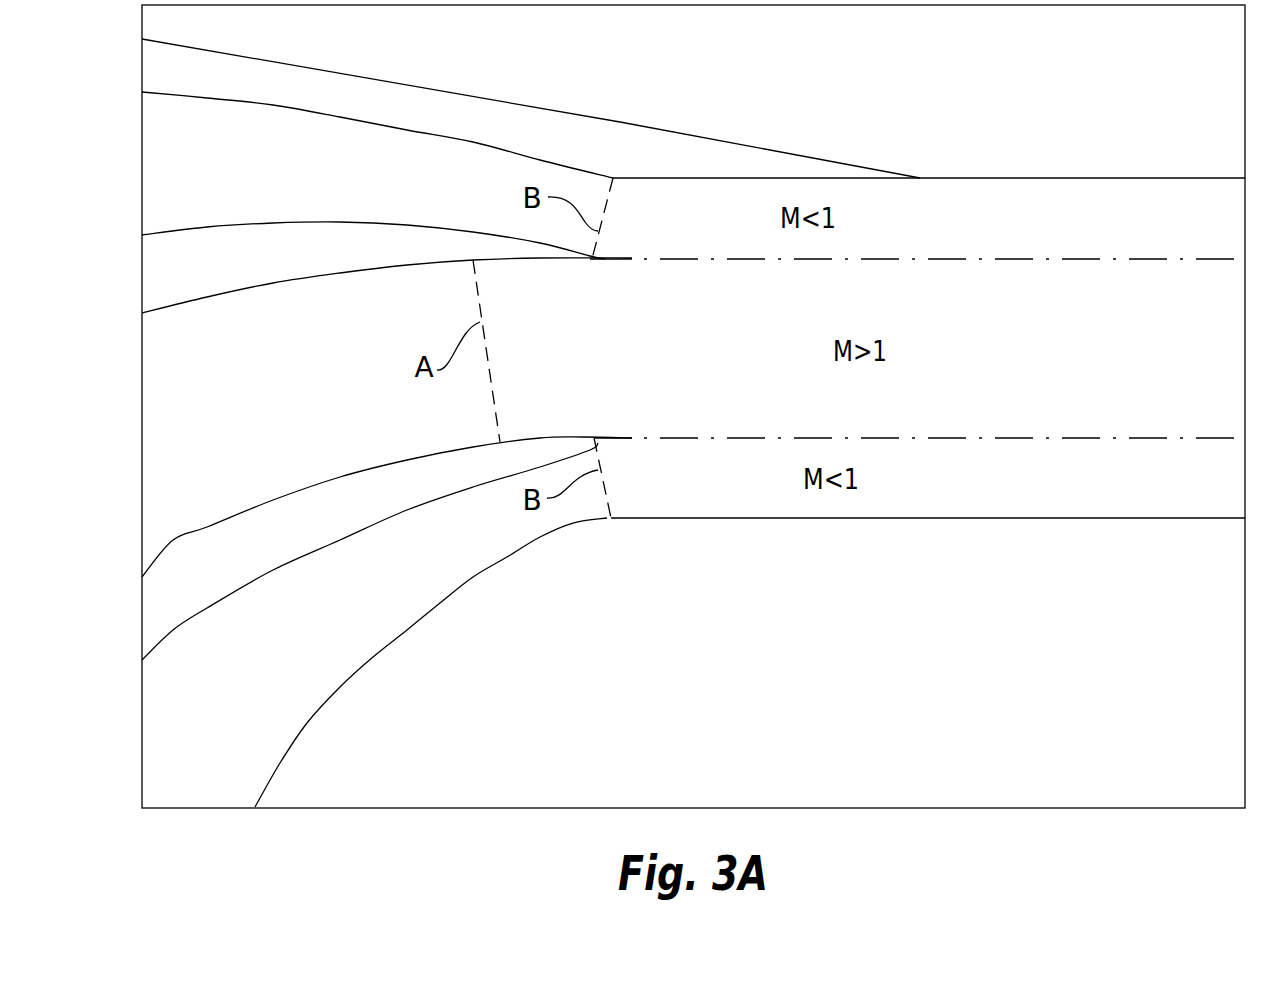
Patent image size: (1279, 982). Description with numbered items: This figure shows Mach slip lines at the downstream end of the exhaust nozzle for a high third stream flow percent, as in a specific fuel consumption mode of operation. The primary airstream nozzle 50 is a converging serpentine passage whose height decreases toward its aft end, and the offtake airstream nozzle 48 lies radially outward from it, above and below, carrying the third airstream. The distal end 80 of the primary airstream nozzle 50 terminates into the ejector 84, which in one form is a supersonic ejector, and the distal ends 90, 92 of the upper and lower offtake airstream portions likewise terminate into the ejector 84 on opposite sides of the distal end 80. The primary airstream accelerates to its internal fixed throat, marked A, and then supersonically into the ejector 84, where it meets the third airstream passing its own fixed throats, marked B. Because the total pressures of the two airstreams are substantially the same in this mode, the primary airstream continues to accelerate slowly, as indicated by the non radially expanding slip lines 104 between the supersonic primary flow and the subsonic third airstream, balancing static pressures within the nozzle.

The offtake airstream nozzle 48 is at (339, 185).
The primary airstream nozzle 50 is at (239, 406).
The distal end of the primary airstream nozzle 80 is at (570, 352).
The ejector 84 is at (1006, 363).
The distal end of the upper offtake airstream portion 90 is at (626, 211).
The distal end of the lower offtake airstream portion 92 is at (614, 483).
The non radially expanding slip lines 104 is at (638, 264).